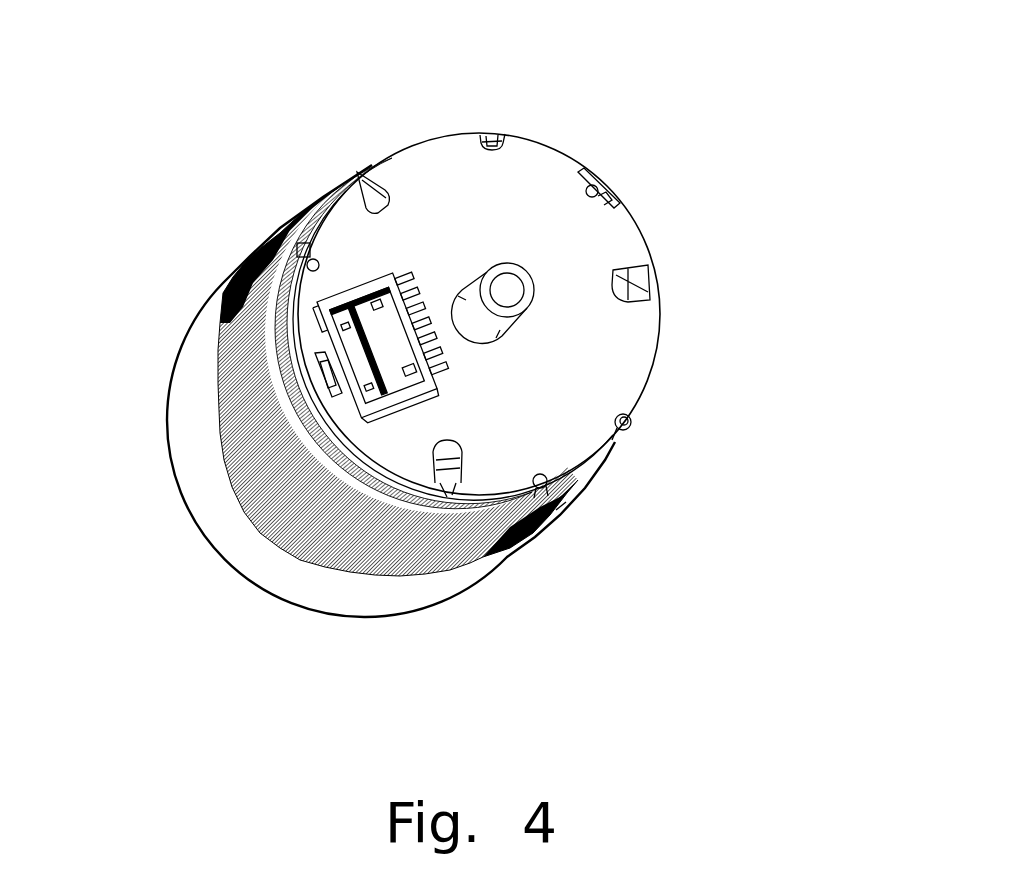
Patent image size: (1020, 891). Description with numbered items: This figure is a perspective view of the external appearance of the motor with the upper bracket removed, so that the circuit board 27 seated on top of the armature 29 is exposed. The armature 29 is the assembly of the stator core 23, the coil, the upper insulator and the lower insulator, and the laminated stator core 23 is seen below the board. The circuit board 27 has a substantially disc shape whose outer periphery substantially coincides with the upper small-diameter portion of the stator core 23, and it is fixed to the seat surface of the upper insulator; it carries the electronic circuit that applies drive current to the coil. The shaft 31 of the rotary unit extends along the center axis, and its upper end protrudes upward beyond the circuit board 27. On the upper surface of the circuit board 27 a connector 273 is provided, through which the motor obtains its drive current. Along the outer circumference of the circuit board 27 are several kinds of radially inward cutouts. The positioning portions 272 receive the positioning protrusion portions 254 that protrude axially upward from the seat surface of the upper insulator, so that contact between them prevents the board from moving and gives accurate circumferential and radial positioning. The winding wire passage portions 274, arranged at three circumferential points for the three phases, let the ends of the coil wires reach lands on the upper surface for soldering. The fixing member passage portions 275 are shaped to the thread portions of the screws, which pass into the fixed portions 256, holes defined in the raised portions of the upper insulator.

The stator core 23 is at (430, 572).
The circuit board 27 is at (528, 212).
The armature 29 is at (537, 557).
The shaft 31 is at (505, 263).
The positioning protrusion portions 254 is at (488, 132).
The fixed portions 256 is at (602, 190).
The positioning portions 272 is at (498, 138).
The connector 273 is at (345, 340).
The winding wire passage portions 274 is at (352, 187).
The fixing member passage portions 275 is at (308, 262).